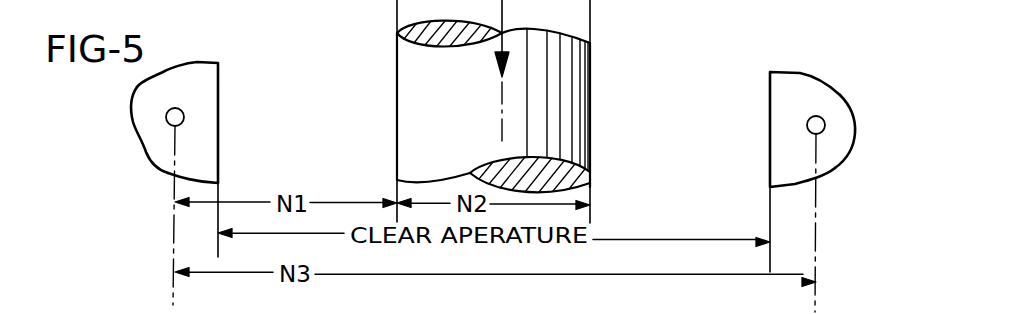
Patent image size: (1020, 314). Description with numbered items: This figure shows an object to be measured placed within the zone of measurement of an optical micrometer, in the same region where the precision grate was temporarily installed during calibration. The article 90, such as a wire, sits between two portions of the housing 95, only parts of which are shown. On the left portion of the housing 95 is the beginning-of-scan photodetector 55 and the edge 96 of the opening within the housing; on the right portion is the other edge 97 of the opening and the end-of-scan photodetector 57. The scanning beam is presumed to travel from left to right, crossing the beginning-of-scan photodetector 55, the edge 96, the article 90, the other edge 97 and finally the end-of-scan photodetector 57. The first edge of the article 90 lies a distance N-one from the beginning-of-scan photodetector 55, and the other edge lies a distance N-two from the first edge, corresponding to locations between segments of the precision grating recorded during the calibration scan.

The beginning-of-scan photodetector 55 is at (167, 114).
The end-of-scan photodetector 57 is at (820, 117).
The article 90 is at (570, 87).
The housing 95 is at (158, 147).
The edge of the opening 96 is at (219, 91).
The other edge of the opening 97 is at (770, 135).